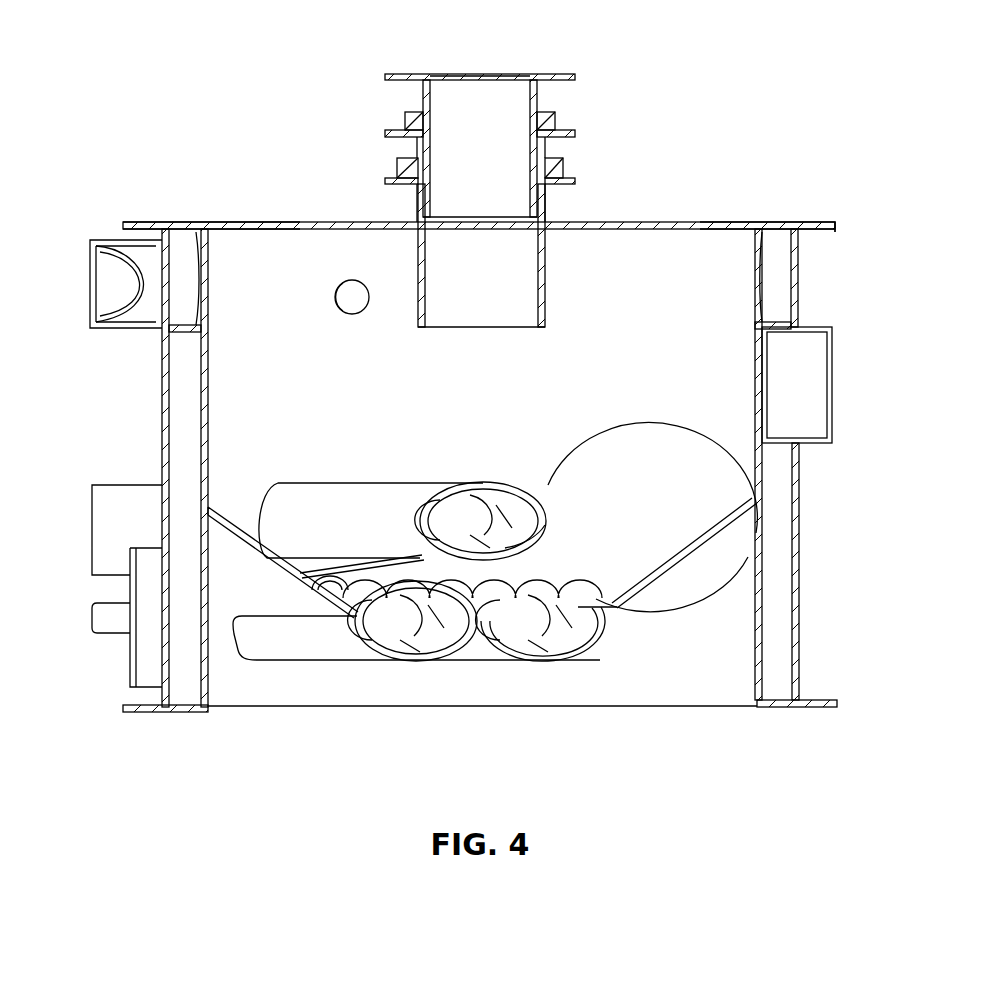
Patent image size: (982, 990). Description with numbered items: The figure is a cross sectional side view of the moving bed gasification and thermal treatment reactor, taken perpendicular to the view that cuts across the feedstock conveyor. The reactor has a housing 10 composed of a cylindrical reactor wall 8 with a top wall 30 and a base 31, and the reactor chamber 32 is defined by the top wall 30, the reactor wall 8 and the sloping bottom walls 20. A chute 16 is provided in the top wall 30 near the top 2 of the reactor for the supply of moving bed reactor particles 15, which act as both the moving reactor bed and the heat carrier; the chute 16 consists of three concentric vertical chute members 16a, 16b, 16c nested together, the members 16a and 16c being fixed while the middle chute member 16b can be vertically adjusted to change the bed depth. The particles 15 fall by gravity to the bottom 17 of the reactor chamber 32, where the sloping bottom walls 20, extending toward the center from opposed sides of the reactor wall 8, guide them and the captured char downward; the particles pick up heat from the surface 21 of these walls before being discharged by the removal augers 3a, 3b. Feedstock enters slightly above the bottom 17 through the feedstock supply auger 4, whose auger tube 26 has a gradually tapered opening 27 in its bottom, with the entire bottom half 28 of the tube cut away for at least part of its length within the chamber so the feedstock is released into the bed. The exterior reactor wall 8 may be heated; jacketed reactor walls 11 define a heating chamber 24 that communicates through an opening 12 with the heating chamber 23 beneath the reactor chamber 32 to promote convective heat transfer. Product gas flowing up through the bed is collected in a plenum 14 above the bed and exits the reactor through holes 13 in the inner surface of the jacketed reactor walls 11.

The top 2 is at (300, 218).
The top wall 30 is at (245, 218).
The housing 10 is at (805, 216).
The chute member 16a is at (413, 74).
The middle chute member 16b is at (385, 128).
The chute member 16c is at (393, 178).
The moving bed reactor particles 15 is at (476, 270).
The chute 16 is at (543, 302).
The jacketed reactor walls 11 is at (200, 373).
The holes 13 is at (205, 278).
The plenum 14 is at (652, 340).
The reactor chamber 32 is at (724, 317).
The reactor wall 8 is at (763, 386).
The base 31 is at (805, 712).
The heating chamber 23 is at (296, 689).
The heating chamber 24 is at (181, 560).
The auger tube 26 is at (350, 499).
The tapered opening 27 is at (378, 555).
The surface 21 is at (662, 489).
The opening 12 is at (689, 617).
The sloping bottom walls 20 is at (710, 549).
The feedstock supply auger 4 is at (482, 530).
The bottom half 28 is at (529, 549).
The removal auger 3a is at (422, 625).
The removal auger 3b is at (541, 550).
The bottom 17 is at (454, 660).